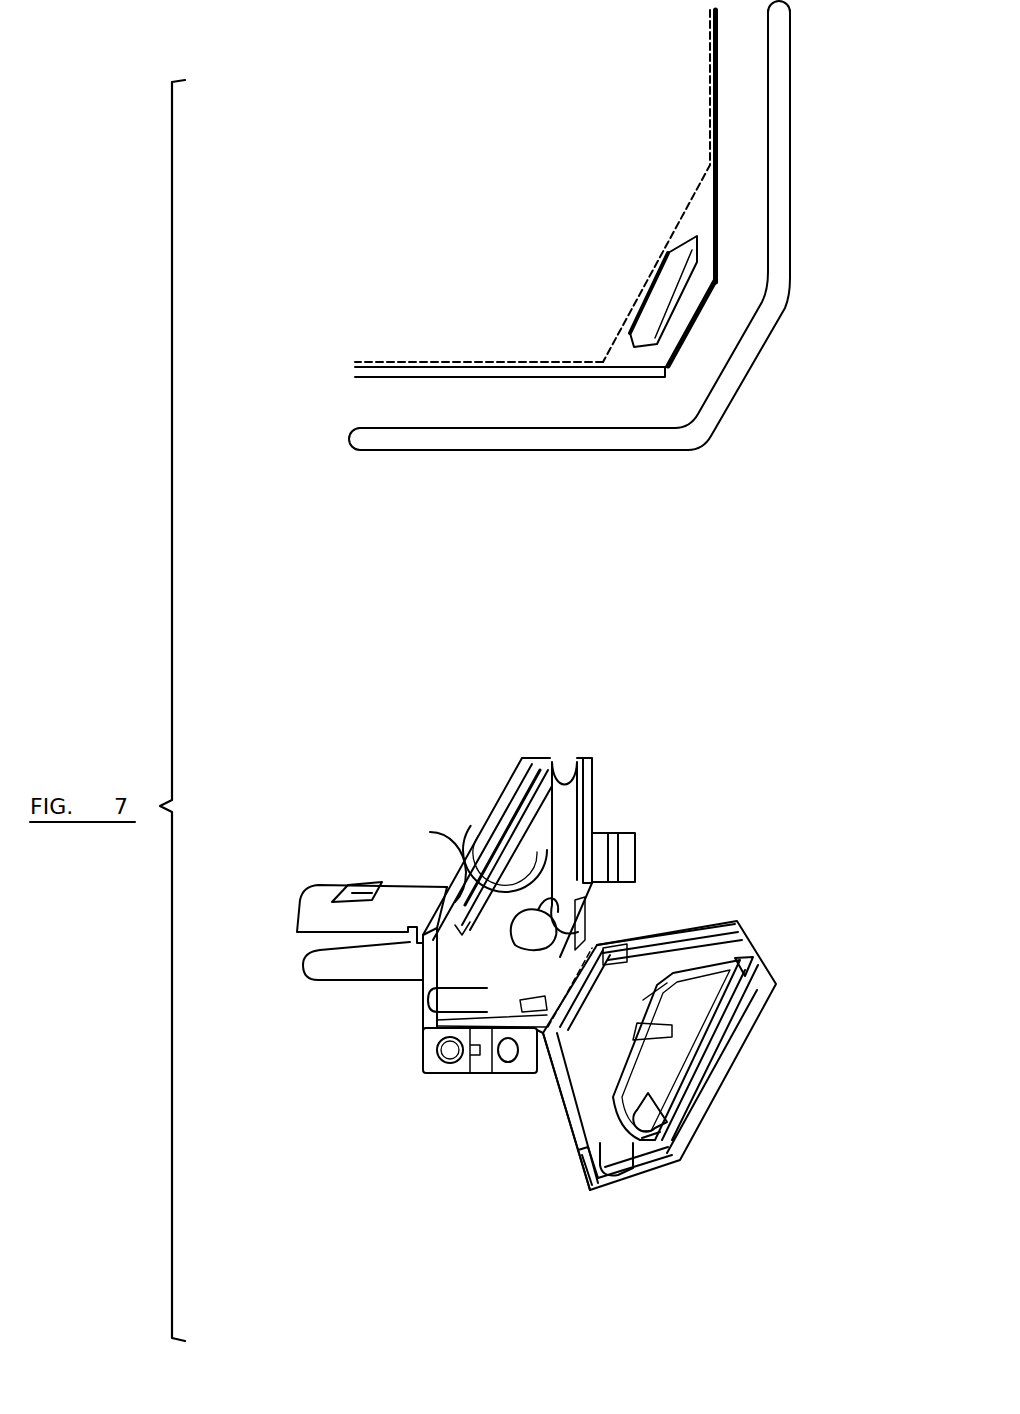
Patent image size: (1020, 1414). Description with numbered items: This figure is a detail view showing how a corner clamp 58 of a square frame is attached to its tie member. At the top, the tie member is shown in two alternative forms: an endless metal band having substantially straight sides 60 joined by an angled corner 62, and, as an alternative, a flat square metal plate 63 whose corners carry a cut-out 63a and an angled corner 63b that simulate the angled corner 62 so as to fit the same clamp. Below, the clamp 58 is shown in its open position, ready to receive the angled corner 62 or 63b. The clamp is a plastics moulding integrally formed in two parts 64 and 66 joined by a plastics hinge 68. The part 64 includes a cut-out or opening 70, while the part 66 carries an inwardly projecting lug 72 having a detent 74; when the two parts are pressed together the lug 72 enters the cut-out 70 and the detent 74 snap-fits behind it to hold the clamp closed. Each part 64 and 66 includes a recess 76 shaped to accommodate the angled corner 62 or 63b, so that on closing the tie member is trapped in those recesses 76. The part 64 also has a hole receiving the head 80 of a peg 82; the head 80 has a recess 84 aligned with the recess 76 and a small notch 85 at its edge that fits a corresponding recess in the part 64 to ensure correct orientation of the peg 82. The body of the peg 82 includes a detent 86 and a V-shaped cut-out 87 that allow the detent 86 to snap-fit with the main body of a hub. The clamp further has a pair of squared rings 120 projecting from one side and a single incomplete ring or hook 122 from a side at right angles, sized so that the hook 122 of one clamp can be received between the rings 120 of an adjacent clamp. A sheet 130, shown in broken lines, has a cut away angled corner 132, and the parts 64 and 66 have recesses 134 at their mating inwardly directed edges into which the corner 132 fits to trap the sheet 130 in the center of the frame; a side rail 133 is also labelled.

The corner clamp 58 is at (688, 920).
The substantially straight side 60 is at (777, 150).
The angled corner 62 is at (747, 368).
The flat square metal plate 63 is at (436, 229).
The cut-out 63a is at (680, 272).
The angled corner 63b is at (718, 293).
The clamp part 64 is at (423, 1007).
The clamp part 66 is at (580, 1160).
The plastics hinge 68 is at (567, 1103).
The cut-out or opening 70 is at (520, 807).
The inwardly projecting lug 72 is at (680, 1072).
The detent 74 is at (623, 1167).
The recess 76 is at (560, 768).
The head 80 is at (660, 933).
The peg 82 is at (418, 893).
The recess 84 is at (510, 1077).
The notch 85 is at (443, 885).
The detent 86 is at (353, 884).
The V-shaped cut-out 87 is at (335, 942).
The squared ring 120 is at (432, 1080).
The incomplete ring or hook 122 is at (613, 832).
The sheet 130 is at (710, 80).
The cut away angled corner 132 is at (627, 320).
The side rail 133 is at (778, 975).
The recess 134 is at (543, 757).